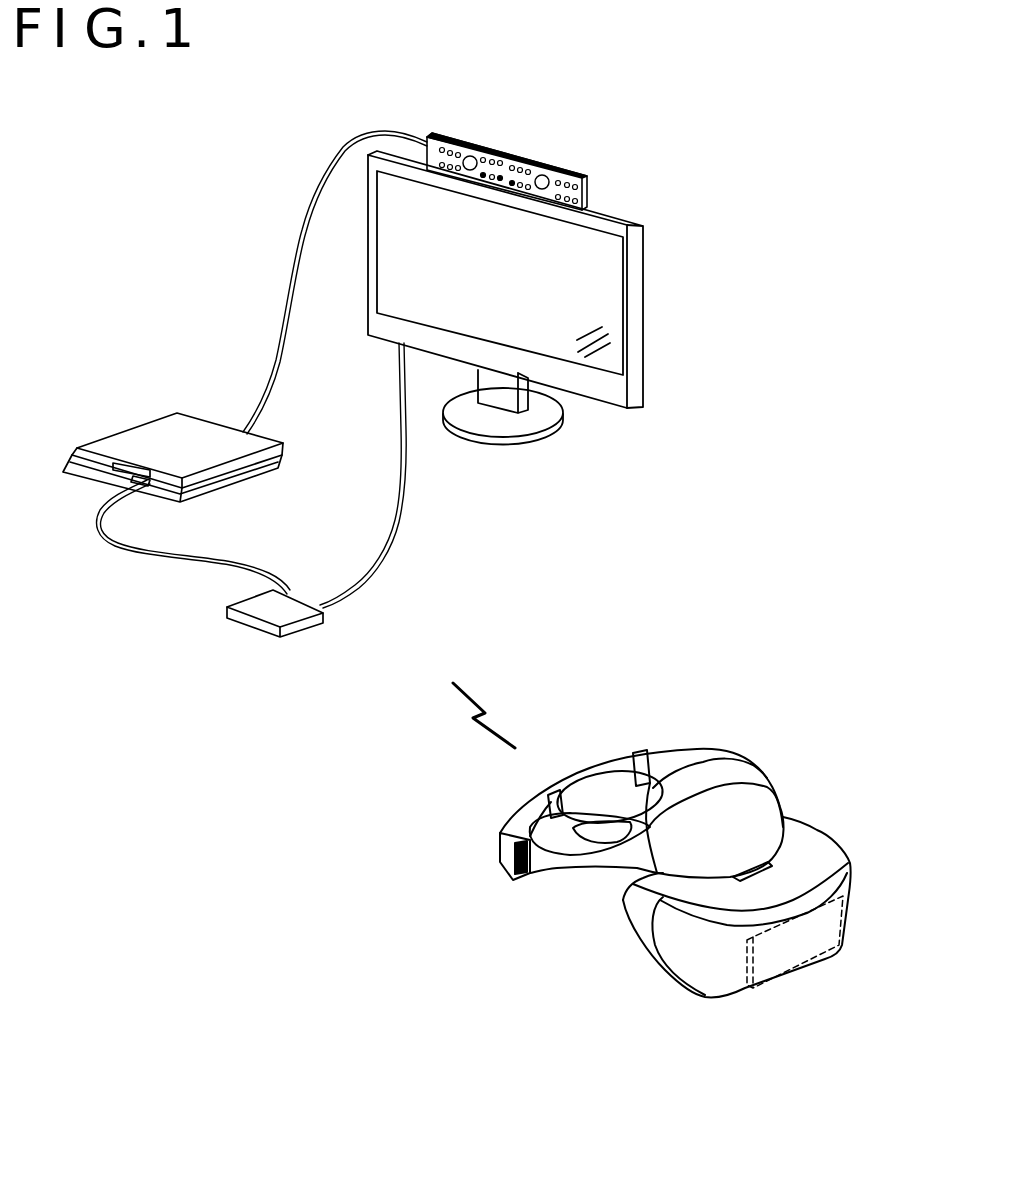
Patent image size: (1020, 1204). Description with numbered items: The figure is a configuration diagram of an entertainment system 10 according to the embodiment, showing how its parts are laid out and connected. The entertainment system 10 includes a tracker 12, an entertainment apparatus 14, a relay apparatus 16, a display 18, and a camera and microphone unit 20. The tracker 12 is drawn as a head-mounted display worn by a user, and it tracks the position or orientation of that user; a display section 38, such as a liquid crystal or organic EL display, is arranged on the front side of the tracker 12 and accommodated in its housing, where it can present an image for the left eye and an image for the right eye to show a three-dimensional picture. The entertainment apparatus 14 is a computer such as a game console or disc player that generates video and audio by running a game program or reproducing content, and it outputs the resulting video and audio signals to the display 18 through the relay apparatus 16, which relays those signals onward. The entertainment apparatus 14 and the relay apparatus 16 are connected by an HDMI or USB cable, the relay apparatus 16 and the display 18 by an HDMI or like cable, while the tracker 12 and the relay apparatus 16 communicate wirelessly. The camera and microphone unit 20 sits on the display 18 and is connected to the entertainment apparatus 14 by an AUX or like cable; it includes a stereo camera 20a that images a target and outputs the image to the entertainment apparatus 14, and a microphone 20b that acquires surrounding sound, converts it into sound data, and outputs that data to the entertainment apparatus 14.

The entertainment system 10 is at (803, 477).
The tracker 12 is at (727, 1000).
The entertainment apparatus 14 is at (122, 430).
The relay apparatus 16 is at (323, 607).
The display 18 is at (645, 310).
The camera and microphone unit 20 is at (587, 192).
The camera 20a is at (467, 170).
The microphone 20b is at (500, 146).
The display section 38 is at (853, 908).